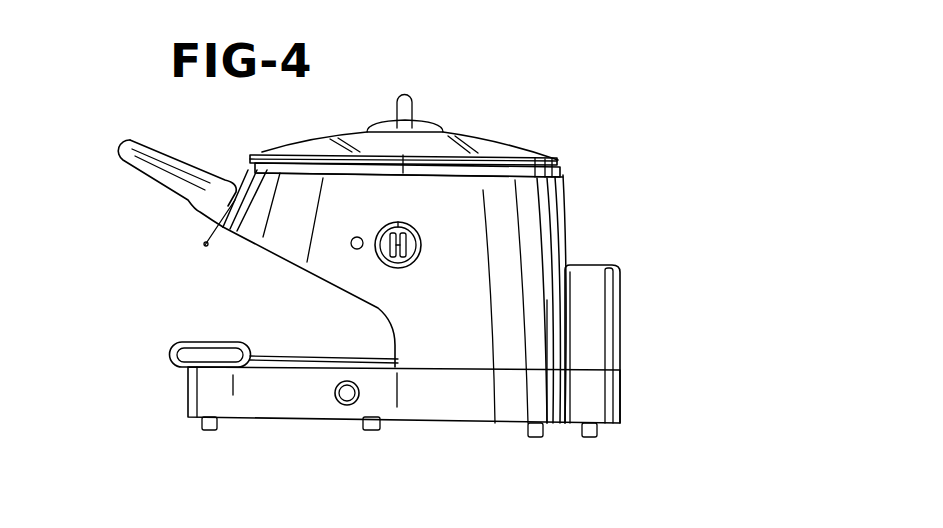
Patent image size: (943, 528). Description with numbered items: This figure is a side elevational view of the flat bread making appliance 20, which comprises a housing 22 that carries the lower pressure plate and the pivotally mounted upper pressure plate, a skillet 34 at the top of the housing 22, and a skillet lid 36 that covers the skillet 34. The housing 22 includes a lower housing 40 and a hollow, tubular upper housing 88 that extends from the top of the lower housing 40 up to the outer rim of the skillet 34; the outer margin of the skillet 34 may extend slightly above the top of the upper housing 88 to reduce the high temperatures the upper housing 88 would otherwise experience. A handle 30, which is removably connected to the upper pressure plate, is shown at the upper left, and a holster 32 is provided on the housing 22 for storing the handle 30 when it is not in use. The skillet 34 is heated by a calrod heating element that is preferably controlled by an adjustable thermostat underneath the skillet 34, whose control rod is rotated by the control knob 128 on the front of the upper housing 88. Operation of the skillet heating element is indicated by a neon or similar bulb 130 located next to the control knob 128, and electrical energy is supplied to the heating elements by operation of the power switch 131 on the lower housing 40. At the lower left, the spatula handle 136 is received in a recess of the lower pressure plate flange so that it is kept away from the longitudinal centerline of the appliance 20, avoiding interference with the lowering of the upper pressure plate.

The flat bread making appliance 20 is at (220, 292).
The housing 22 is at (535, 243).
The handle 30 is at (190, 163).
The holster 32 is at (600, 297).
The skillet 34 is at (560, 164).
The skillet lid 36 is at (483, 140).
The lower housing 40 is at (470, 405).
The upper housing 88 is at (547, 343).
The control knob 128 is at (418, 262).
The bulb 130 is at (357, 237).
The power switch 131 is at (347, 405).
The spatula handle 136 is at (207, 343).